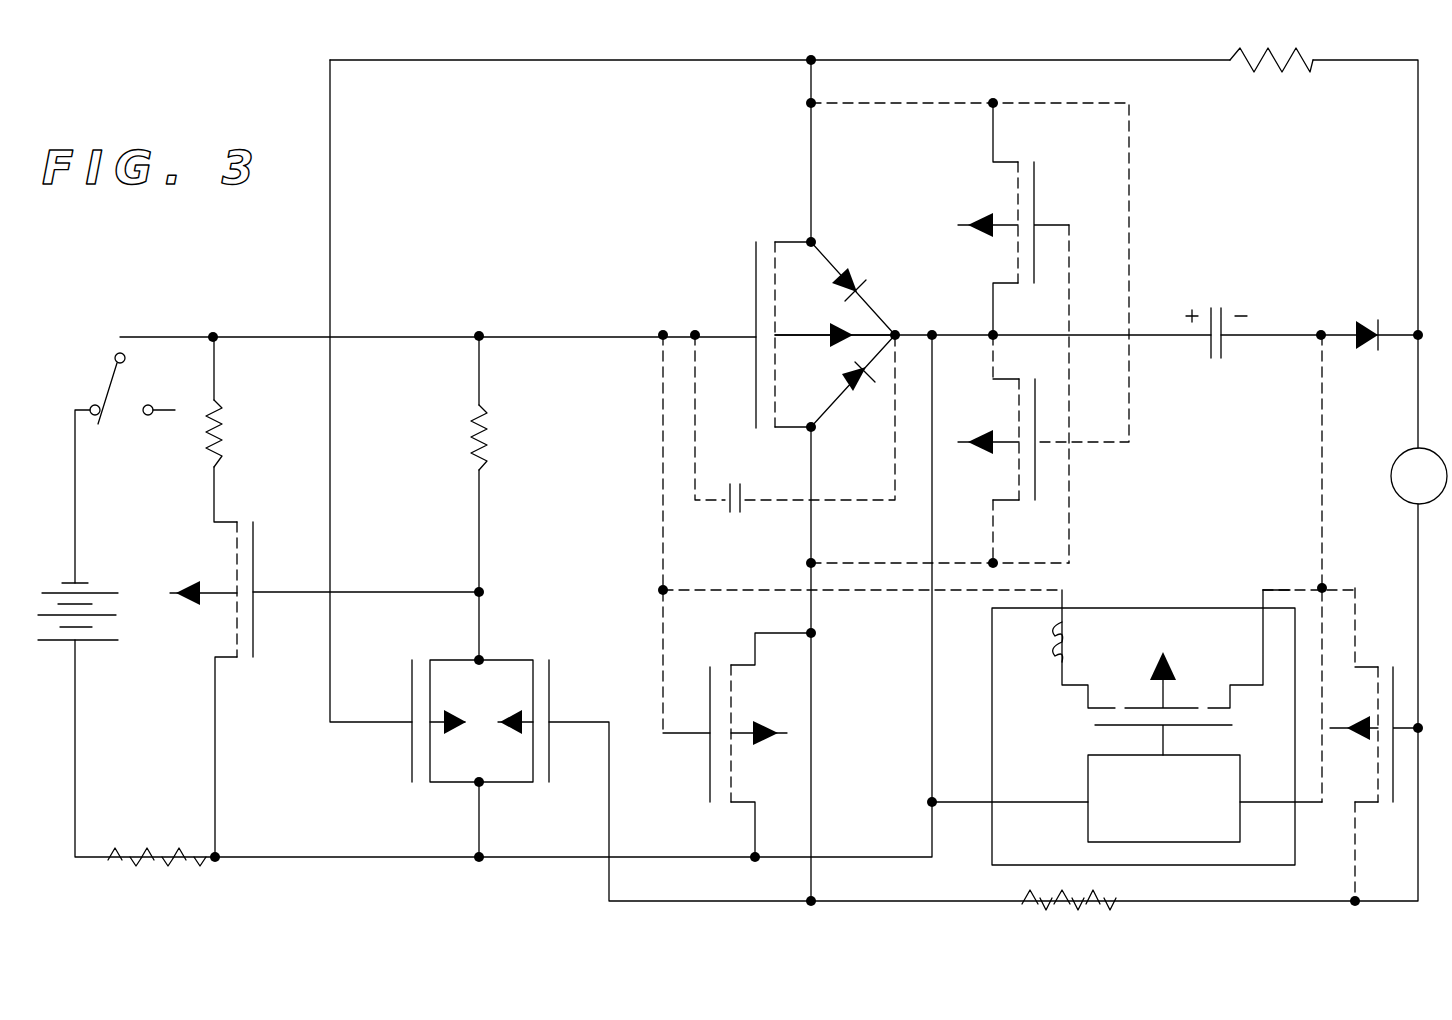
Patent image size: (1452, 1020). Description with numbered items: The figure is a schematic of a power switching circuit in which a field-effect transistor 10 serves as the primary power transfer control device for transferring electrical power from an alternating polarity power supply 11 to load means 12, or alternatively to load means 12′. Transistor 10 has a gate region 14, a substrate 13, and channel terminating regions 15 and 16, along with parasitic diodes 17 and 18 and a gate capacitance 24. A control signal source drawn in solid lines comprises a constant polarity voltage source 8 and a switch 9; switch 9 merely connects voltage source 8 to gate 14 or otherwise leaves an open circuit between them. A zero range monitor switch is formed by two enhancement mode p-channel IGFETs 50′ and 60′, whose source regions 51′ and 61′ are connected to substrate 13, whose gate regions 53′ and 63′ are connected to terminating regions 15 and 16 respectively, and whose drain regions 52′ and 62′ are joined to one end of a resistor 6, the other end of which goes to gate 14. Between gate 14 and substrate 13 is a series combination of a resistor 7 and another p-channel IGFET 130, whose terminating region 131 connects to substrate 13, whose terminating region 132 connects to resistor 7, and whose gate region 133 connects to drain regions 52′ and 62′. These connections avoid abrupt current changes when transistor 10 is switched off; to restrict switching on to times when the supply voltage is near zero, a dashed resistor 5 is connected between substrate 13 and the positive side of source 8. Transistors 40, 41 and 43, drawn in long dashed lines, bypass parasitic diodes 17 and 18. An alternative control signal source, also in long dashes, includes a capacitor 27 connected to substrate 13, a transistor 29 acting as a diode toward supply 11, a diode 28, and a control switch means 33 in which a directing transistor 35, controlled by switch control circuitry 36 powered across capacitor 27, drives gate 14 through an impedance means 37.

The resistor 5 is at (150, 870).
The resistor 6 is at (488, 440).
The resistor 7 is at (222, 418).
The constant polarity voltage source means 8 is at (118, 625).
The switch means 9 is at (110, 368).
The transistor 10 is at (814, 303).
The power supply 11 is at (1438, 452).
The load means 12 is at (1300, 52).
The load means 12′ is at (1078, 905).
The substrate 13 is at (897, 332).
The gate region 14 is at (752, 258).
The channel terminating region 15 is at (813, 240).
The channel terminating region 16 is at (815, 430).
The parasitic diode 17 is at (857, 290).
The parasitic diode 18 is at (868, 392).
The capacitance 24 is at (735, 514).
The capacitor 27 is at (1216, 304).
The diode 28 is at (1365, 320).
The enhancement mode p-channel IGFET 29 is at (1366, 704).
The control switch means 33 is at (1195, 607).
The primary directing transistor 35 is at (1232, 646).
The switch control circuitry 36 is at (1088, 775).
The impedance means 37 is at (1068, 650).
The transistor 40 is at (1000, 194).
The transistor 41 is at (996, 416).
The transistor 43 is at (790, 710).
The enhancement mode p-channel IGFET 50′ is at (480, 704).
The source region 51′ is at (452, 785).
The drain region 52′ is at (452, 660).
The gate region 53′ is at (405, 768).
The enhancement mode p-channel IGFET 60′ is at (532, 704).
The source region 61′ is at (502, 784).
The drain region 62′ is at (506, 660).
The gate region 63′ is at (553, 678).
The enhancement mode p-channel IGFET 130 is at (210, 560).
The terminating region 131 is at (226, 663).
The terminating region 132 is at (226, 520).
The gate region 133 is at (256, 566).